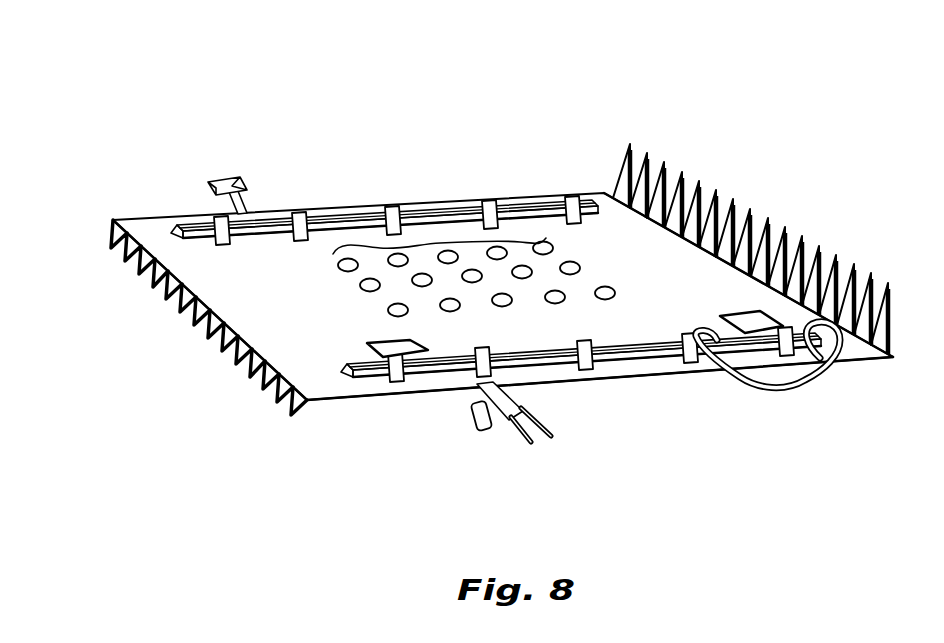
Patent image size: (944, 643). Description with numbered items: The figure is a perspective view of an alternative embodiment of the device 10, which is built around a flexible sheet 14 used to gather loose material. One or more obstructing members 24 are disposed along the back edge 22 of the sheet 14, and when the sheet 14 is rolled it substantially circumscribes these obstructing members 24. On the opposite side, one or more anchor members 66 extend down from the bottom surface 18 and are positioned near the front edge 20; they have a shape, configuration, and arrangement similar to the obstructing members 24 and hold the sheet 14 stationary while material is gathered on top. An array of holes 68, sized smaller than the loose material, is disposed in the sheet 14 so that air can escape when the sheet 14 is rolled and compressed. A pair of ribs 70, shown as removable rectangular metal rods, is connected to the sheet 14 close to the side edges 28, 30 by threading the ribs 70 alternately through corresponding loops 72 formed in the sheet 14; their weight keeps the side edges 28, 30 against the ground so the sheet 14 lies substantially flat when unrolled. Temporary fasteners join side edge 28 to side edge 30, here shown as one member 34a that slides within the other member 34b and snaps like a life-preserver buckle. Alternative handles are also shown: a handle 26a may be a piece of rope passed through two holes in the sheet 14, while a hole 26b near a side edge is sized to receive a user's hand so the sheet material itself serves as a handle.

The device 10 is at (503, 202).
The sheet 14 is at (630, 251).
The bottom surface 18 is at (170, 297).
The front edge 20 is at (315, 420).
The back edge 22 is at (742, 222).
The obstructing members 24 is at (727, 208).
The handle 26a is at (770, 395).
The hole 26b is at (382, 340).
The side edge 28 is at (384, 183).
The side edge 30 is at (581, 415).
The temporary fastener member 34a is at (215, 178).
The temporary fastener member 34b is at (500, 425).
The anchor members 66 is at (187, 320).
The holes 68 is at (433, 240).
The ribs 70 is at (357, 213).
The loops 72 is at (560, 210).